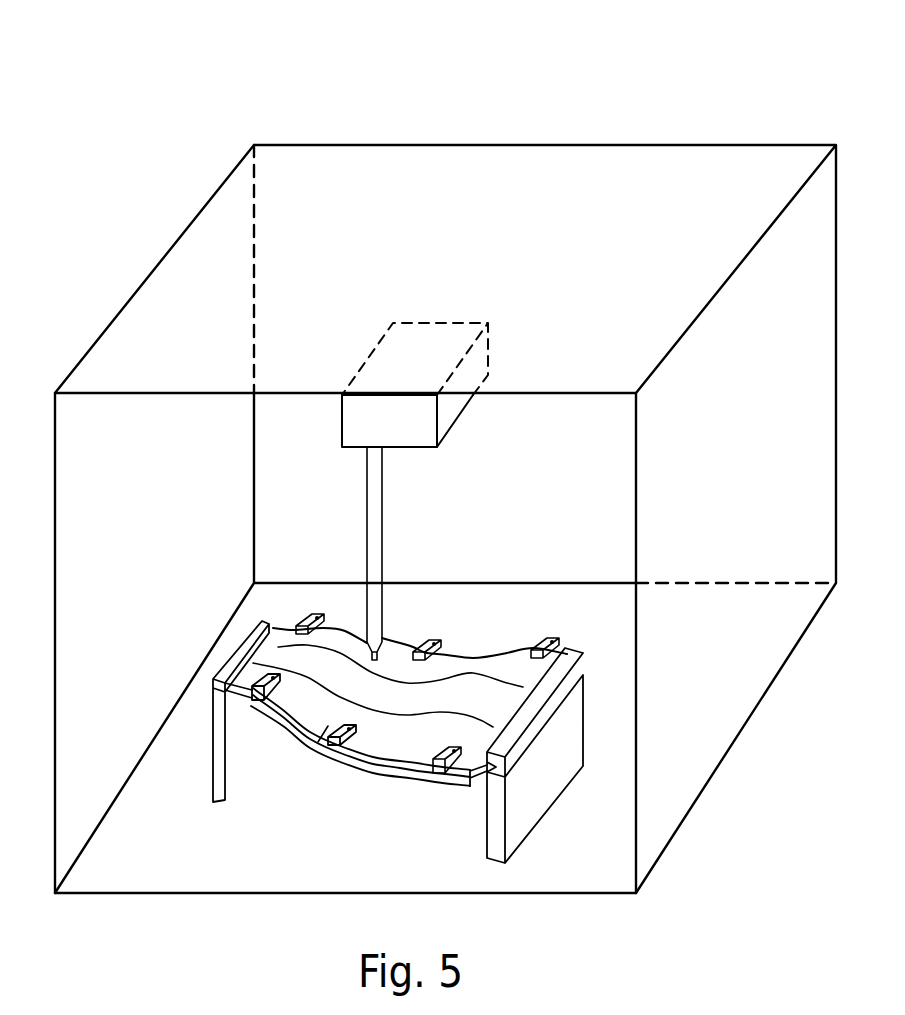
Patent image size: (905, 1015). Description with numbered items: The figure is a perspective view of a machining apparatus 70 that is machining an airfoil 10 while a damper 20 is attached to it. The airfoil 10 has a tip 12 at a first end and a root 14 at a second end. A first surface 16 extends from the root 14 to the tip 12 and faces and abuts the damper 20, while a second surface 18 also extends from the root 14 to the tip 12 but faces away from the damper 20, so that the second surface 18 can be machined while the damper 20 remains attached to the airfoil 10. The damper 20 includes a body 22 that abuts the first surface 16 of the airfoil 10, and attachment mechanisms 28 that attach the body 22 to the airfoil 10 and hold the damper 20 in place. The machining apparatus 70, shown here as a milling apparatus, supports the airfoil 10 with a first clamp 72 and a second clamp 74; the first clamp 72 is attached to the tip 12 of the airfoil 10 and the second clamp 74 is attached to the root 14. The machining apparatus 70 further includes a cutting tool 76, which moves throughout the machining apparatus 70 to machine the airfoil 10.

The machining apparatus 70 is at (395, 85).
The first clamp 72 is at (212, 681).
The second clamp 74 is at (566, 661).
The cutting tool 76 is at (375, 620).
The airfoil 10 is at (494, 637).
The tip 12 is at (266, 642).
The root 14 is at (521, 700).
The first surface 16 is at (325, 703).
The second surface 18 is at (397, 665).
The damper 20 is at (343, 797).
The body 22 is at (397, 766).
The attachment mechanisms 28 is at (435, 772).